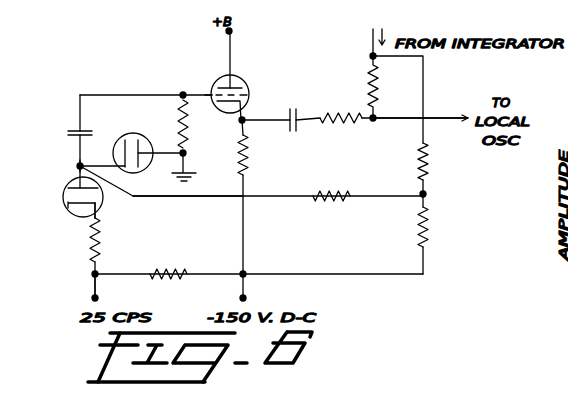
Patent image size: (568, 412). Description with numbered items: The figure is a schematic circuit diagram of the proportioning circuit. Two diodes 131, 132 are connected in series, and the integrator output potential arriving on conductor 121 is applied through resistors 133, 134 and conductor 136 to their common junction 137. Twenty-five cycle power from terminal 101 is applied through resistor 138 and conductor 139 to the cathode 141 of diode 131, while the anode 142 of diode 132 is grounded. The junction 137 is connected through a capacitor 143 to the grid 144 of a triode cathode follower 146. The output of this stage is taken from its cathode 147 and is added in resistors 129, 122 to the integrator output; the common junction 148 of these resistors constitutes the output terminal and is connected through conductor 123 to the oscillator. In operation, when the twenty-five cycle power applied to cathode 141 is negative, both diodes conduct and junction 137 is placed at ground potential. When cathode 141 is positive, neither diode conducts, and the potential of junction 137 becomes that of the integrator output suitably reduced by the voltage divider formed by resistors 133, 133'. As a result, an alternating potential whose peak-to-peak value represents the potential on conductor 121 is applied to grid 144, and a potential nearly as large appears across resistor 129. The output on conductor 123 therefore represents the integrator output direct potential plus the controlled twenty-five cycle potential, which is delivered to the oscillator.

The terminal 101 is at (92, 298).
The conductor 121 is at (370, 44).
The resistor 122 is at (368, 83).
The conductor 123 is at (434, 117).
The resistor 129 is at (356, 111).
The diode 131 is at (70, 188).
The diode 132 is at (133, 133).
The resistor 133 is at (444, 161).
The resistor 133' is at (444, 227).
The resistor 134 is at (314, 200).
The conductor 136 is at (185, 198).
The common junction 137 is at (78, 165).
The resistor 138 is at (101, 244).
The conductor 139 is at (97, 214).
The cathode 141 is at (68, 204).
The anode 142 is at (150, 139).
The capacitor 143 is at (72, 131).
The grid 144 is at (215, 84).
The triode cathode follower 146 is at (245, 82).
The cathode 147 is at (247, 98).
The common junction 148 is at (376, 122).